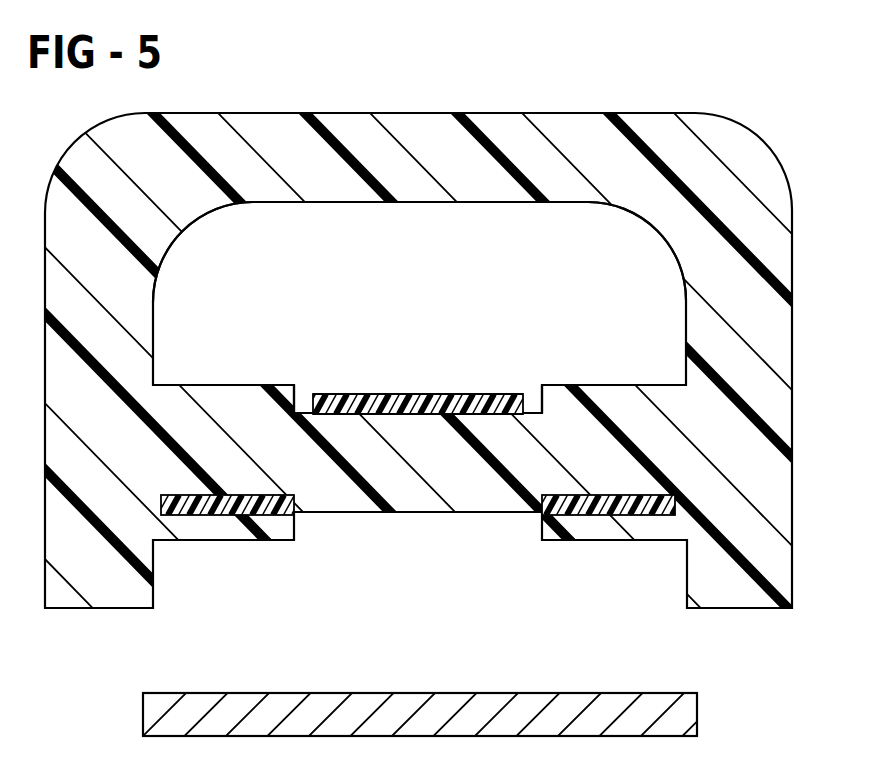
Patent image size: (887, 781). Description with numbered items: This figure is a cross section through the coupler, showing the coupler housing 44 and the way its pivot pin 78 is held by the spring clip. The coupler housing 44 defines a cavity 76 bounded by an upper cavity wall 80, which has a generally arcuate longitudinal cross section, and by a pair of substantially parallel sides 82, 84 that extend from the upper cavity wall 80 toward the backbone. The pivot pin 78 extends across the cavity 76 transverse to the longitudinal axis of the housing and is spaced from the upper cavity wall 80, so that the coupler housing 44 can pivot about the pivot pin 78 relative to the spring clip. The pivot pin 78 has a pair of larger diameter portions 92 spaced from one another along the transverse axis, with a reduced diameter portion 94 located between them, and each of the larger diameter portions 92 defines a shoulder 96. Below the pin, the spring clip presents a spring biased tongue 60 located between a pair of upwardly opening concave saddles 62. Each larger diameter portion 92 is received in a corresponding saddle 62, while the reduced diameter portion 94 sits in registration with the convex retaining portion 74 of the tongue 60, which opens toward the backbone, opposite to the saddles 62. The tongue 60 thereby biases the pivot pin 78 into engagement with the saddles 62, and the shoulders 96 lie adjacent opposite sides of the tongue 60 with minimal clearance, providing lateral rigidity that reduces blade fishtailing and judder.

The coupler housing 44 is at (647, 107).
The spring biased tongue 60 is at (359, 386).
The concave saddles 62 is at (237, 514).
The convex retaining portion 74 is at (472, 394).
The cavity 76 is at (497, 226).
The pivot pin 78 is at (418, 524).
The upper cavity wall 80 is at (270, 202).
The side 82 is at (140, 300).
The side 84 is at (708, 258).
The larger diameter portions 92 is at (243, 384).
The reduced diameter portion 94 is at (407, 393).
The shoulder 96 is at (294, 394).